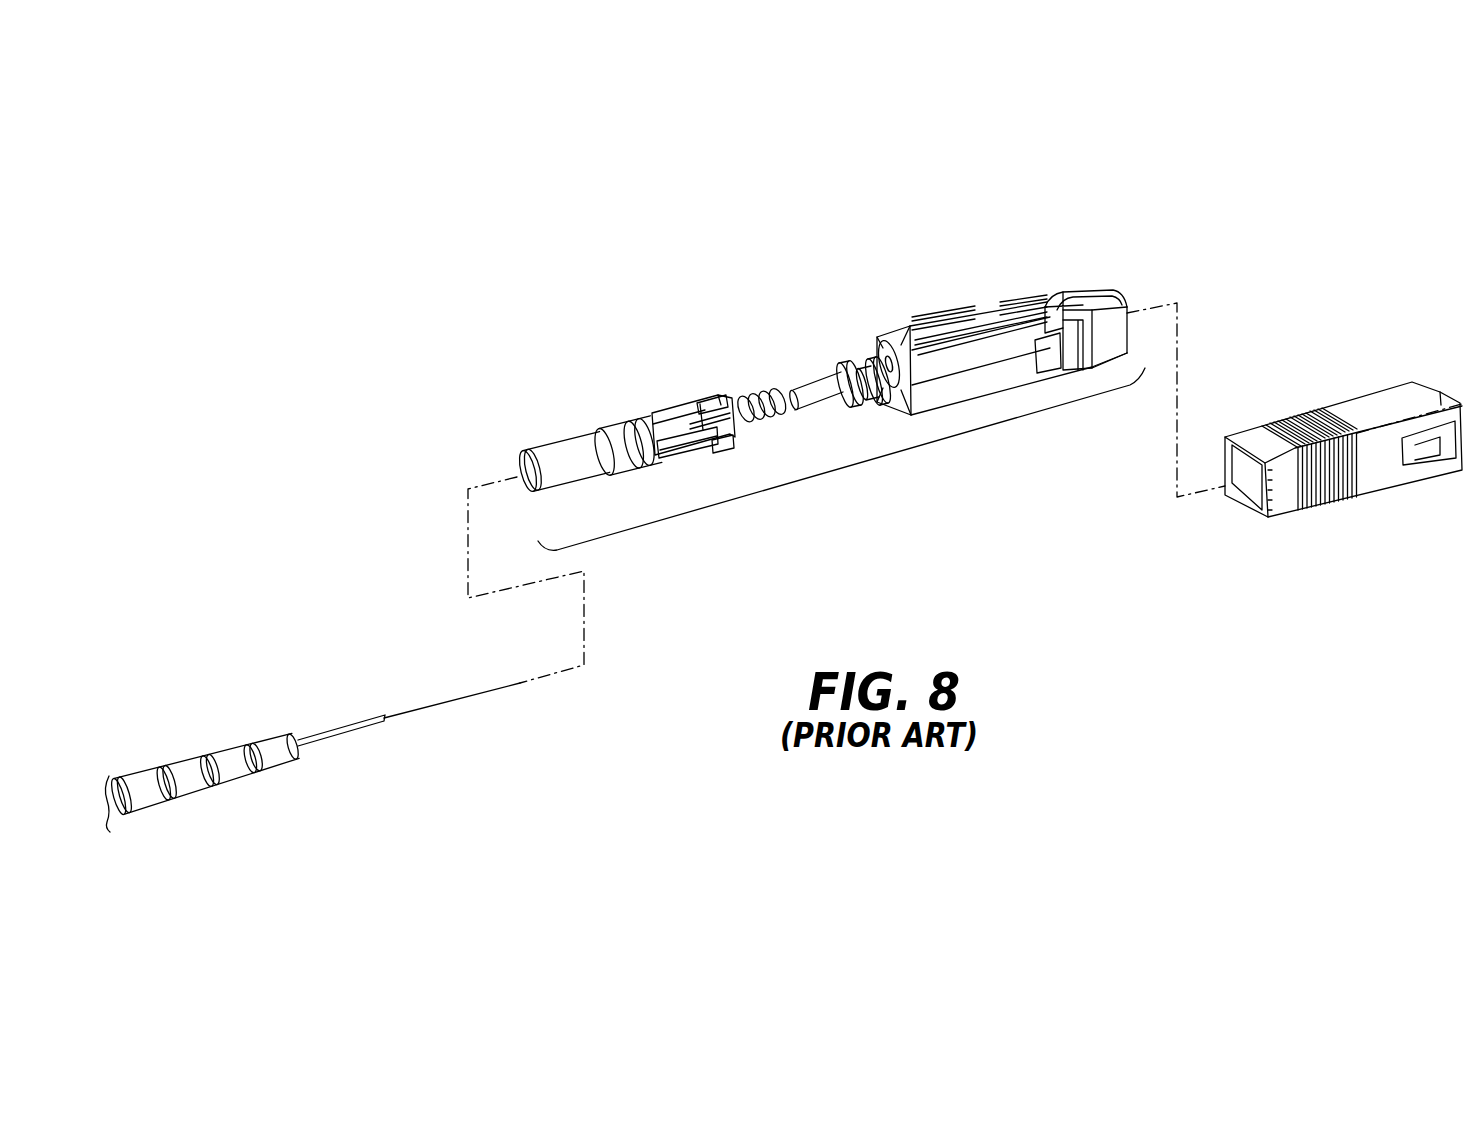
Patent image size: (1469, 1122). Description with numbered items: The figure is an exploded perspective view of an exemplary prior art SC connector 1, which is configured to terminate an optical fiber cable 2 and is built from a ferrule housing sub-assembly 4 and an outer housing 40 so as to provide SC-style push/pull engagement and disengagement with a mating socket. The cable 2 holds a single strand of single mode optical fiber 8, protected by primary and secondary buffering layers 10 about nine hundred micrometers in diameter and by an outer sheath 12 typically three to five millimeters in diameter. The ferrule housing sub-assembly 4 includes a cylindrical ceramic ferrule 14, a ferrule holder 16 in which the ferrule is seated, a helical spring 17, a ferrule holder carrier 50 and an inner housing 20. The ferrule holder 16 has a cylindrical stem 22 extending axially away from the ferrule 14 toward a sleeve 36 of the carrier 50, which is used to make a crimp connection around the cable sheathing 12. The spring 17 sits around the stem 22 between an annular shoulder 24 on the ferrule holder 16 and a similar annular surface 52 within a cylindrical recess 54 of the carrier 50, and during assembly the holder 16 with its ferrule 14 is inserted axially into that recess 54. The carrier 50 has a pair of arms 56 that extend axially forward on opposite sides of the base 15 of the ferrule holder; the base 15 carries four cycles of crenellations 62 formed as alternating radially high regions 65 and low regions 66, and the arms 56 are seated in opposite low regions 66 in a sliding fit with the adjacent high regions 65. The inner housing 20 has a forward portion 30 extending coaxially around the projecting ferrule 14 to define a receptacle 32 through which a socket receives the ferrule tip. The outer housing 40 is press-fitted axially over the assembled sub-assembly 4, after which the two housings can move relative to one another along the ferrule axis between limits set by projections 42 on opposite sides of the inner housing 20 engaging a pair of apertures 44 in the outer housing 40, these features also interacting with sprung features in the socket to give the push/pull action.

The SC connector 1 is at (604, 300).
The optical fiber cable 2 is at (312, 760).
The ferrule housing sub-assembly 4 is at (870, 465).
The optical fiber 8 is at (460, 704).
The primary and secondary buffering layers 10 is at (357, 740).
The outer sheath 12 is at (239, 781).
The cylindrical ceramic ferrule 14 is at (894, 343).
The ferrule base 15 is at (892, 390).
The ferrule holder 16 is at (842, 366).
The helical spring 17 is at (755, 396).
The inner housing 20 is at (1036, 337).
The cylindrical stem 22 is at (808, 407).
The annular shoulder 24 is at (850, 407).
The forward portion 30 is at (1094, 287).
The receptacle 32 is at (1130, 301).
The sleeve 36 is at (566, 478).
The outer housing 40 is at (1343, 435).
The projections 42 is at (1058, 368).
The apertures 44 is at (1422, 455).
The ferrule holder carrier 50 is at (708, 420).
The annular surface 52 is at (668, 457).
The cylindrical recess 54 is at (722, 414).
The arms 56 is at (712, 398).
The crenellations 62 is at (855, 366).
The radially high regions 65 is at (871, 366).
The radially low regions 66 is at (913, 385).